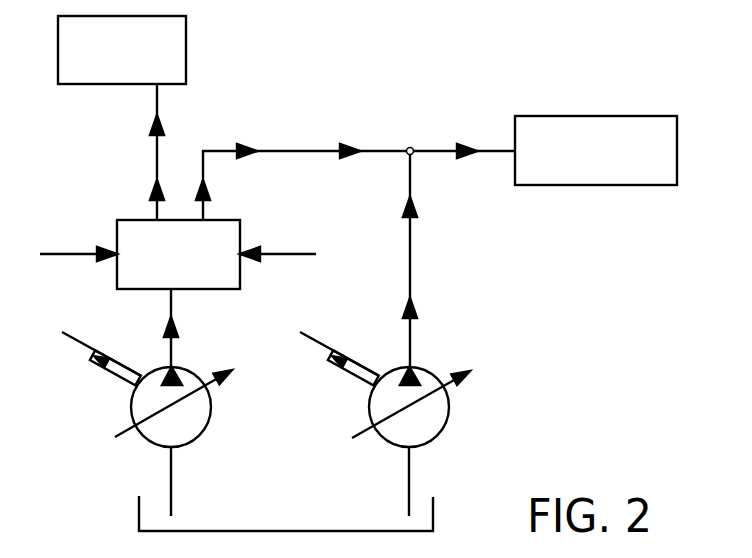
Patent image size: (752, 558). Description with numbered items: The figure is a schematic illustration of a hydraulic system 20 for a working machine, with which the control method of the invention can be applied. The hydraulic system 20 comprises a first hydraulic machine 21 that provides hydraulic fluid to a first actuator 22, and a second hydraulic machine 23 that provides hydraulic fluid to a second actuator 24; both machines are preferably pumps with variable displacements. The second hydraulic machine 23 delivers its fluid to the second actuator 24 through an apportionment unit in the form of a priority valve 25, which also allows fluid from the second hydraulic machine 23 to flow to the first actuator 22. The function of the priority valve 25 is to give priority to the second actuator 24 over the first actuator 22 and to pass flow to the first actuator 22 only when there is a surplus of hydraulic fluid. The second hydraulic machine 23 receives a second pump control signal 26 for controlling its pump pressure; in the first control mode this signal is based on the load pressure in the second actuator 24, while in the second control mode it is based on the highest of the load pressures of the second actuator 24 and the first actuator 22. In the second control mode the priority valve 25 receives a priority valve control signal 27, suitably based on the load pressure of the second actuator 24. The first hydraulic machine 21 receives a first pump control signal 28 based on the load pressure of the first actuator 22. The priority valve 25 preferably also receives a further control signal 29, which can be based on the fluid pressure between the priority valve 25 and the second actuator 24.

The hydraulic system 20 is at (436, 307).
The first hydraulic machine 21 is at (452, 413).
The first actuator 22 is at (627, 167).
The second hydraulic machine 23 is at (131, 400).
The second actuator 24 is at (98, 65).
The priority valve 25 is at (132, 232).
The second pump control signal 26 is at (73, 335).
The priority valve control signal 27 is at (70, 254).
The first pump control signal 28 is at (318, 338).
The further control signal 29 is at (287, 254).